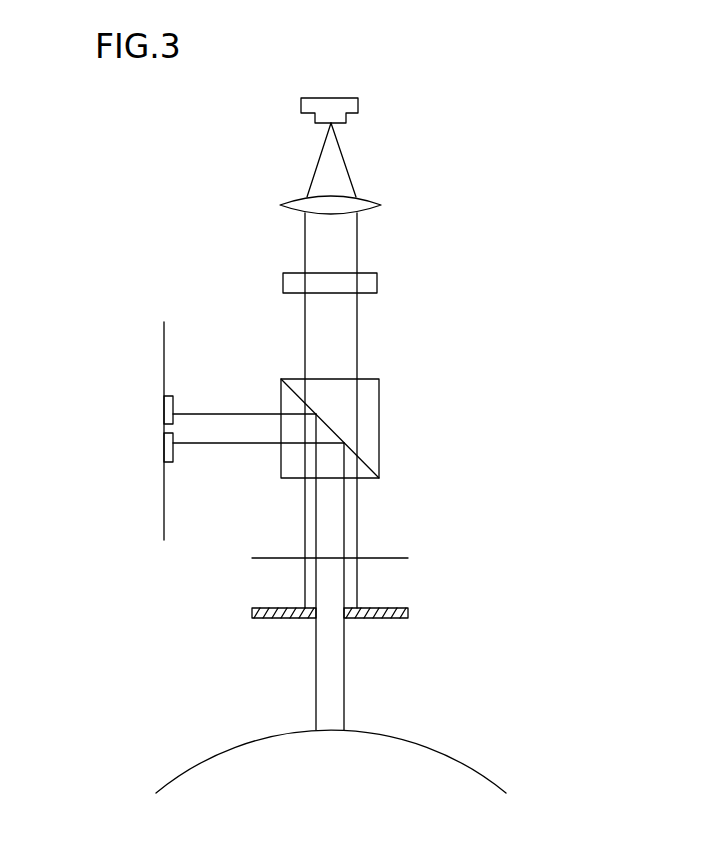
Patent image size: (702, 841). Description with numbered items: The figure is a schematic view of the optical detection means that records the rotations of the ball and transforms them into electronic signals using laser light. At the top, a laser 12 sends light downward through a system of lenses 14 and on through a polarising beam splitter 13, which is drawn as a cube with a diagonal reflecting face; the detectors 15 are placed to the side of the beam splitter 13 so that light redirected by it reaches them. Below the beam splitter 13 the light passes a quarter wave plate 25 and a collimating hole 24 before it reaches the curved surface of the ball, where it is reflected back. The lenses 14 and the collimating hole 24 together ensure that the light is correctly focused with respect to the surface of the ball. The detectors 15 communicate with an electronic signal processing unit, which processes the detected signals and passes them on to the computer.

The laser 12 is at (357, 106).
The polarising beam splitter 13 is at (418, 425).
The system of lenses 14 is at (264, 238).
The detectors 15 is at (129, 423).
The collimating hole 24 is at (249, 630).
The quarter wave plate 25 is at (393, 558).